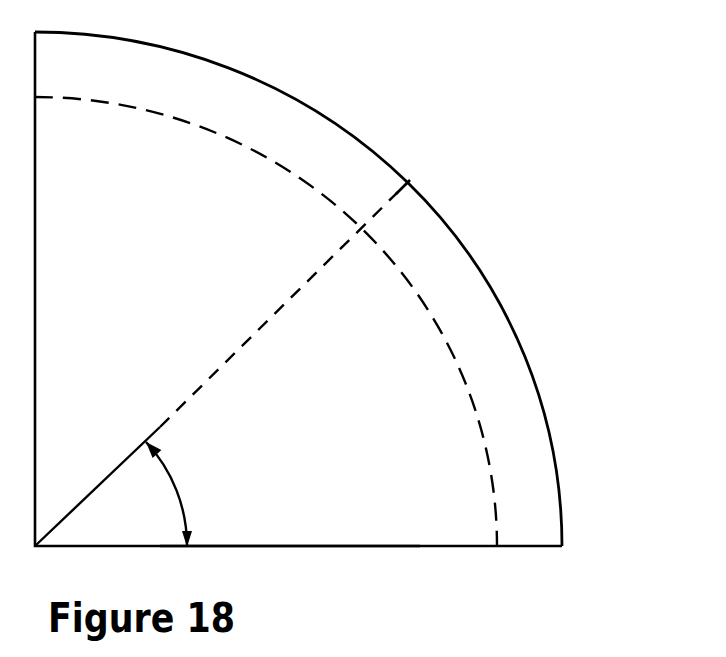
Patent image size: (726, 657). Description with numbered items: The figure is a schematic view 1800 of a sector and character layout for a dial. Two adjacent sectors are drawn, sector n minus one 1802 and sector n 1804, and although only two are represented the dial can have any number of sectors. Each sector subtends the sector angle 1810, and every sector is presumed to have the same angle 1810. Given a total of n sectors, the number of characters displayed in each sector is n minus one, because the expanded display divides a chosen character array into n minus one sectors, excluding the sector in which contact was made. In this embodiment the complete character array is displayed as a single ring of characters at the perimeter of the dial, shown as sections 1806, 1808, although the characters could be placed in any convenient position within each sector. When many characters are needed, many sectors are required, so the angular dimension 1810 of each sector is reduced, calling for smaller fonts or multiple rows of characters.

The schematic view 1800 is at (506, 131).
The sector n−1 1802 is at (162, 353).
The sector n 1804 is at (358, 398).
The character ring section 1806 is at (247, 92).
The character ring section 1808 is at (515, 370).
The angle Alpha 1810 is at (188, 503).